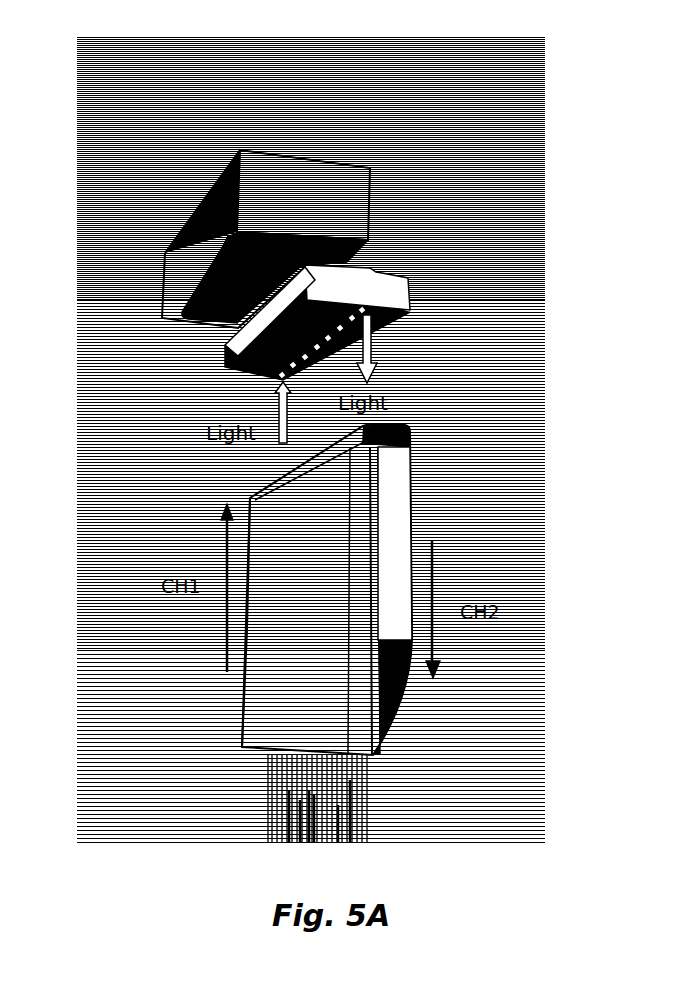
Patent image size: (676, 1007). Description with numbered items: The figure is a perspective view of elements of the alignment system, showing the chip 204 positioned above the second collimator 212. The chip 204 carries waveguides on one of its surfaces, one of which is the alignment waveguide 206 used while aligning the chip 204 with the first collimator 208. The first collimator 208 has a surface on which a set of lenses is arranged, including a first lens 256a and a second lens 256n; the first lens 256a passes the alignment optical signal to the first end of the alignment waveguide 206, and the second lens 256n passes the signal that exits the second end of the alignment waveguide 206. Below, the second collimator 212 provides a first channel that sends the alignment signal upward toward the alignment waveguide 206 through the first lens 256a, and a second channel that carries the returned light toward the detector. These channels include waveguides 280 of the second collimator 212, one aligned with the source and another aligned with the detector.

The chip 204 is at (358, 190).
The alignment waveguide 206 is at (230, 248).
The first collimator 208 is at (402, 303).
The first lens 256a is at (280, 375).
The second lens 256n is at (367, 313).
The second collimator 212 is at (410, 509).
The waveguides 280 is at (218, 803).